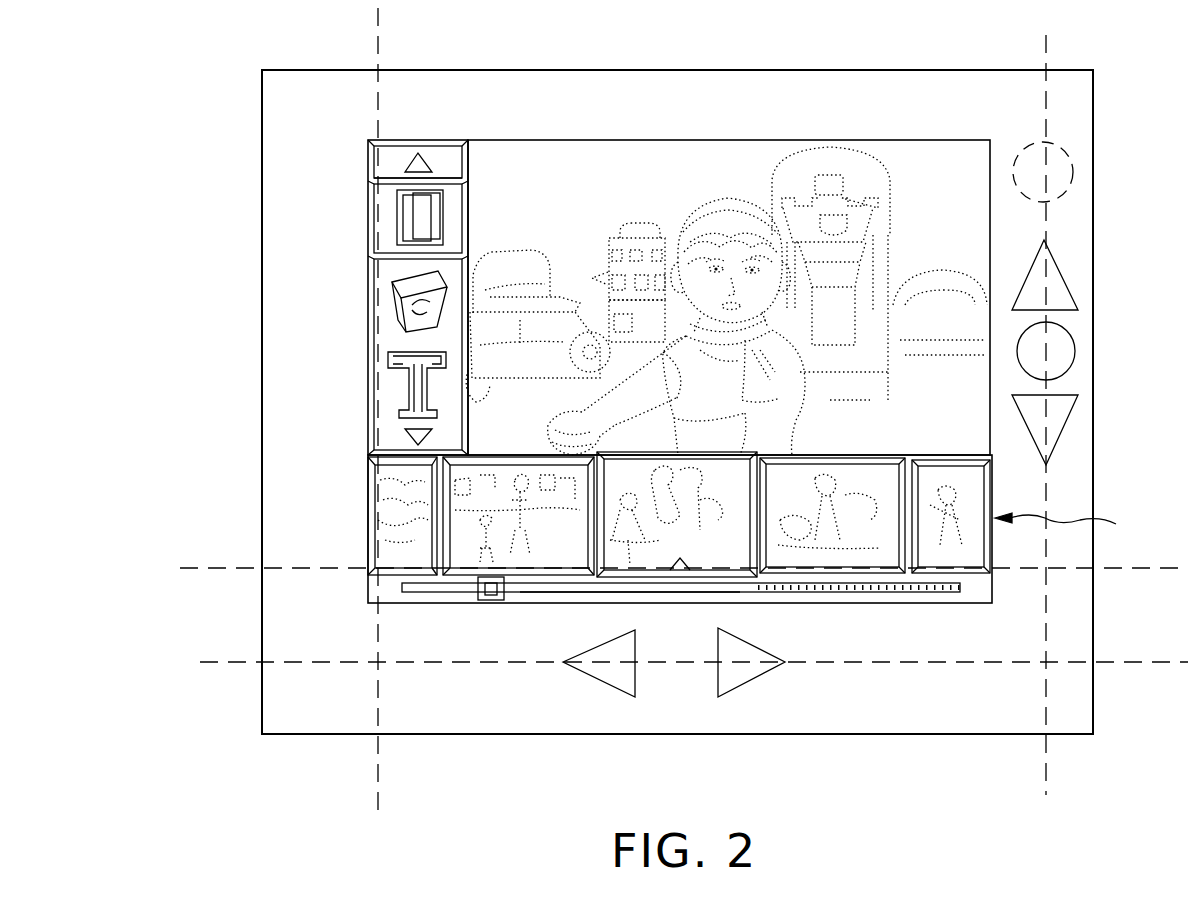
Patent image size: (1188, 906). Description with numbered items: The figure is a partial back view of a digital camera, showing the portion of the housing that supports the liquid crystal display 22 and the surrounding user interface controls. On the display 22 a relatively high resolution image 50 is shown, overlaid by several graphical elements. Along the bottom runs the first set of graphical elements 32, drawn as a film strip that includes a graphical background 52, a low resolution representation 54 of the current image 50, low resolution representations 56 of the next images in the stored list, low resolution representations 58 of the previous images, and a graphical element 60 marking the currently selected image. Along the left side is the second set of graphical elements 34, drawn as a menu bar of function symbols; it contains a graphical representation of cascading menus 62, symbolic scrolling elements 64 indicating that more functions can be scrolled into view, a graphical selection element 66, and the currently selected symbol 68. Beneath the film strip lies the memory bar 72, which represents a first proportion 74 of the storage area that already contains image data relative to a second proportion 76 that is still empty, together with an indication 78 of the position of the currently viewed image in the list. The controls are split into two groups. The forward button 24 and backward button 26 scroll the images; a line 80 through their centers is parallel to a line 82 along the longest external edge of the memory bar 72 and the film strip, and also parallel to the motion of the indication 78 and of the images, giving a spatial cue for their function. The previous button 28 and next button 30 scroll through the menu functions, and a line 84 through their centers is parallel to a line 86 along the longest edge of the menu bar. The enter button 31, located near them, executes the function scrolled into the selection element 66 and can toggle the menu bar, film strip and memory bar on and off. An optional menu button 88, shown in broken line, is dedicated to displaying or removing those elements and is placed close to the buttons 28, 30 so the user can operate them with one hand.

The liquid crystal display 22 is at (982, 208).
The forward image scroll button 24 is at (748, 665).
The backward image scroll button 26 is at (606, 676).
The previous menu select button 28 is at (1050, 420).
The next menu select button 30 is at (1055, 284).
The enter button 31 is at (1058, 352).
The first set of graphical elements 32 is at (1172, 508).
The second set of graphical elements 34 is at (478, 183).
The image 50 is at (708, 180).
The graphical background 52 is at (970, 462).
The low resolution representation of the current image 54 is at (640, 530).
The low resolution representations of the next images 56 is at (960, 540).
The low resolution representations of the previous images 58 is at (470, 553).
The graphical element indicating the currently selected image 60 is at (678, 572).
The graphical representation of cascading menus 62 is at (462, 333).
The symbolic scrolling elements 64 is at (420, 160).
The graphical selection element 66 is at (390, 180).
The selected symbol 68 is at (388, 235).
The memory bar 72 is at (403, 588).
The first proportion 74 is at (555, 592).
The second proportion 76 is at (843, 592).
The position indication 78 is at (491, 600).
The line through the image scroll buttons 80 is at (1130, 662).
The line along the memory bar and film strip edge 82 is at (230, 568).
The line through the function buttons 84 is at (1047, 52).
The line along the menu bar edge 86 is at (380, 47).
The menu button 88 is at (1060, 152).